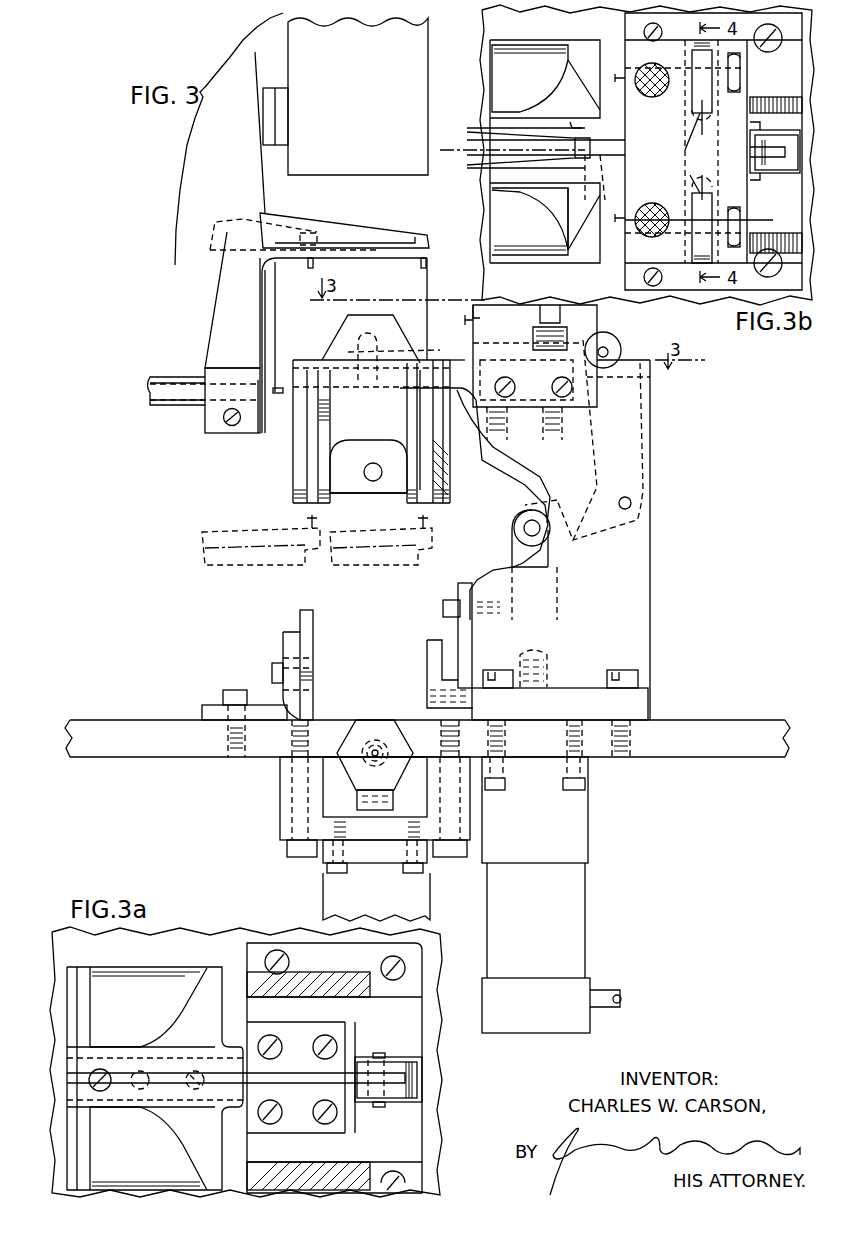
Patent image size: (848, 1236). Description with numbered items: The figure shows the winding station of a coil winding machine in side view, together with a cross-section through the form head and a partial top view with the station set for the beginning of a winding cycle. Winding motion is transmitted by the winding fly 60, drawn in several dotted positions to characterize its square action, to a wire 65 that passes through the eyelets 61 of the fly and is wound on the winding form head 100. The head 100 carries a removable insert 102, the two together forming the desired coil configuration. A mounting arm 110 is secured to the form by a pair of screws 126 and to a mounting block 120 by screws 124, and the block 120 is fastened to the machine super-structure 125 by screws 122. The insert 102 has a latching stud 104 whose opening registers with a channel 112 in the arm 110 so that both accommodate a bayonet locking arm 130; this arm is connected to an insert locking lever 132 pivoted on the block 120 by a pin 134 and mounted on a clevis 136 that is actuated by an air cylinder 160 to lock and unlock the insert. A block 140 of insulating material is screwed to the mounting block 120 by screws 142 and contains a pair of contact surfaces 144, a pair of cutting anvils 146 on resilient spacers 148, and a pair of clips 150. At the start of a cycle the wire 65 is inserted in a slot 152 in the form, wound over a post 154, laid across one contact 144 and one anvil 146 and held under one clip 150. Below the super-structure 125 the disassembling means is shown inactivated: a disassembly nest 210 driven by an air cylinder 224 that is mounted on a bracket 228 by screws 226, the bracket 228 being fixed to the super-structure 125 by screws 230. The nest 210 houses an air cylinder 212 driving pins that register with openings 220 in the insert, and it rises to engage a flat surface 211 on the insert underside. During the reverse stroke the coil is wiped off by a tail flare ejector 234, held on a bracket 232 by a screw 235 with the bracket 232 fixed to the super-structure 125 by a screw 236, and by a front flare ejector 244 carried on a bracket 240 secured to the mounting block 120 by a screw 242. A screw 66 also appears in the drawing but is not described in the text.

In FIG. 3, the winding fly 60 is at (218, 318).
In FIG. 3B, the winding fly 60 is at (470, 168).
In FIG. 3, the eyelets 61 is at (283, 266).
In FIG. 3B, the eyelets 61 is at (572, 125).
In FIG. 3, the wire 65 is at (262, 165).
In FIG. 3B, the wire 65 is at (758, 220).
In FIG. 3, the screw 66 is at (232, 427).
In FIG. 3, the winding form head 100 is at (293, 455).
In FIG. 3A, the winding form head 100 is at (77, 968).
In FIG. 3B, the winding form head 100 is at (590, 50).
In FIG. 3, the removable insert 102 is at (345, 337).
In FIG. 3A, the removable insert 102 is at (173, 975).
In FIG. 3B, the removable insert 102 is at (490, 228).
In FIG. 3, the latching stud 104 is at (365, 333).
In FIG. 3A, the latching stud 104 is at (148, 1088).
In FIG. 3, the mounting arm 110 is at (555, 437).
In FIG. 3A, the mounting arm 110 is at (297, 1028).
In FIG. 3B, the mounting arm 110 is at (485, 128).
In FIG. 3A, the channel 112 is at (100, 1072).
In FIG. 3, the mounting block 120 is at (650, 553).
In FIG. 3A, the mounting block 120 is at (420, 1148).
In FIG. 3B, the mounting block 120 is at (630, 26).
In FIG. 3, the screws 122 is at (605, 678).
In FIG. 3A, the screws 122 is at (292, 962).
In FIG. 3B, the screws 122 is at (660, 30).
In FIG. 3, the screws 124 is at (508, 443).
In FIG. 3A, the screws 124 is at (320, 1100).
In FIG. 3, the super-structure 125 is at (693, 733).
In FIG. 3A, the super-structure 125 is at (437, 1050).
In FIG. 3B, the super-structure 125 is at (484, 55).
In FIG. 3A, the screws 126 is at (195, 1072).
In FIG. 3, the bayonet locking arm 130 is at (440, 350).
In FIG. 3A, the bayonet locking arm 130 is at (215, 1085).
In FIG. 3B, the bayonet locking arm 130 is at (626, 145).
In FIG. 3, the insert locking lever 132 is at (648, 452).
In FIG. 3A, the insert locking lever 132 is at (424, 1085).
In FIG. 3B, the insert locking lever 132 is at (777, 168).
In FIG. 3, the pin 134 is at (631, 503).
In FIG. 3, the clevis 136 is at (557, 630).
In FIG. 3, the block of insulating material 140 is at (647, 380).
In FIG. 3A, the block of insulating material 140 is at (262, 972).
In FIG. 3B, the block of insulating material 140 is at (676, 255).
In FIG. 3, the screws 142 is at (558, 397).
In FIG. 3B, the contact surfaces 144 is at (652, 98).
In FIG. 3B, the cutting anvils 146 is at (702, 137).
In FIG. 3B, the resilient spacers 148 is at (688, 152).
In FIG. 3B, the clips 150 is at (734, 95).
In FIG. 3, the slot 152 is at (455, 465).
In FIG. 3, the posts 154 is at (470, 318).
In FIG. 3B, the posts 154 is at (614, 80).
In FIG. 3, the air cylinder 160 is at (585, 918).
In FIG. 3, the disassembly nest 210 is at (357, 803).
In FIG. 3, the flat surface 211 is at (352, 493).
In FIG. 3, the air cylinder 212 is at (392, 777).
In FIG. 3, the openings 220 is at (376, 482).
In FIG. 3, the air cylinder 224 is at (425, 892).
In FIG. 3, the screws 226 is at (405, 873).
In FIG. 3, the bracket 228 is at (283, 796).
In FIG. 3, the screws 230 is at (287, 848).
In FIG. 3, the bracket 232 is at (283, 642).
In FIG. 3, the tail flare ejector block 234 is at (312, 625).
In FIG. 3, the screw 235 is at (275, 666).
In FIG. 3, the screw 236 is at (232, 695).
In FIG. 3, the bracket 240 is at (465, 585).
In FIG. 3, the screw 242 is at (445, 606).
In FIG. 3, the front flare ejector block 244 is at (433, 642).